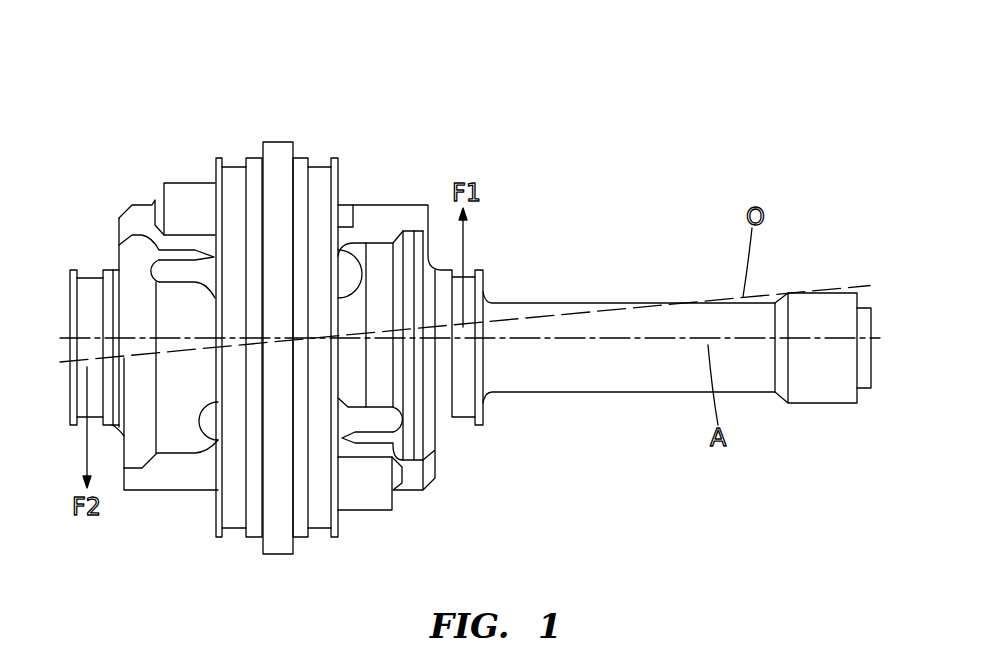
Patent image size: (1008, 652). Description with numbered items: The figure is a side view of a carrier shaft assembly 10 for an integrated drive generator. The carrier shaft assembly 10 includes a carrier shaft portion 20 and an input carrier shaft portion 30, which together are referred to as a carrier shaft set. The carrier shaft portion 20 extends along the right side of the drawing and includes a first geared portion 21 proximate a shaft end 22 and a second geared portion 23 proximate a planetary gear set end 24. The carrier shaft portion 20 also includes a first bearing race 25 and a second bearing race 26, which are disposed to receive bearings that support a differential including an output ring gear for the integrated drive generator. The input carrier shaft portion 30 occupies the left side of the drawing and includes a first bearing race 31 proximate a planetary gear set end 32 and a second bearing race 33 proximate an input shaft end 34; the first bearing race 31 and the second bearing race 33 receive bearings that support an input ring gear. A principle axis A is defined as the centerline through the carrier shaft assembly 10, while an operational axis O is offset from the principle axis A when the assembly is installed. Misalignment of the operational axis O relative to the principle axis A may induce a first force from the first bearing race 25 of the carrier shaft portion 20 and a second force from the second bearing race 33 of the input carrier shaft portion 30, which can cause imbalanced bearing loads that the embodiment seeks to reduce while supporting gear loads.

The carrier shaft assembly 10 is at (131, 71).
The carrier shaft portion 20 is at (533, 302).
The first geared portion 21 is at (828, 403).
The shaft end 22 is at (871, 366).
The second geared portion 23 is at (283, 145).
The planetary gear set end 24 is at (297, 538).
The first bearing race 25 is at (483, 270).
The second bearing race 26 is at (322, 236).
The input carrier shaft portion 30 is at (72, 428).
The first bearing race 31 is at (235, 164).
The planetary gear set end 32 is at (252, 540).
The second bearing race 33 is at (88, 278).
The input shaft end 34 is at (70, 320).